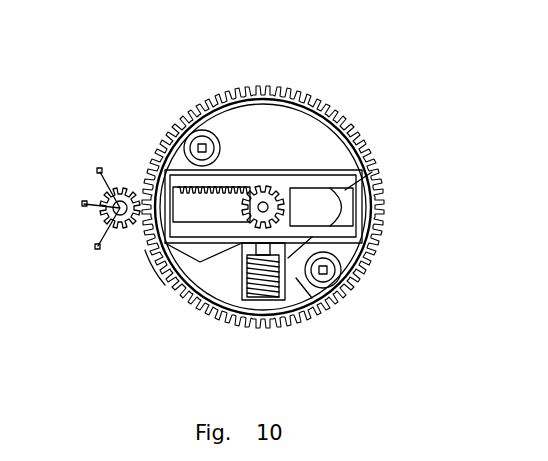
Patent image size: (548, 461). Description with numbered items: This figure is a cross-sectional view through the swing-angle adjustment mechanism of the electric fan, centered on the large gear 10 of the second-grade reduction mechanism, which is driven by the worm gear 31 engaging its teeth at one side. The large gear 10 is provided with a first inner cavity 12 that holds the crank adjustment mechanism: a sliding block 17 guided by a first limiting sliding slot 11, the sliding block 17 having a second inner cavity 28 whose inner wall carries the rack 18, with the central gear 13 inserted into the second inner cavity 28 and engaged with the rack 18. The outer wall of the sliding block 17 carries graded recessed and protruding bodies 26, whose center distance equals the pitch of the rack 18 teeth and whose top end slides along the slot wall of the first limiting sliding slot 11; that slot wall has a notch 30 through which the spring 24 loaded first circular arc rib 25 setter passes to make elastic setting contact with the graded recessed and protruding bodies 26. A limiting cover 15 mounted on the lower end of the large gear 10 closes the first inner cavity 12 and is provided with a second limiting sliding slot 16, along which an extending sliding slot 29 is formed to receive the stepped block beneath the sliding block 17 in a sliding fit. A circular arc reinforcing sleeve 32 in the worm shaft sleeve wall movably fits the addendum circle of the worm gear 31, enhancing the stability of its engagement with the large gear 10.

The large gear 10 is at (270, 92).
The first limiting sliding slot 11 is at (148, 262).
The first inner cavity 12 is at (298, 283).
The central gear 13 is at (250, 188).
The limiting cover 15 is at (331, 100).
The second limiting sliding slot 16 is at (373, 204).
The sliding block 17 is at (167, 172).
The rack 18 is at (252, 200).
The spring 24 is at (273, 305).
The first circular arc rib 25 is at (362, 283).
The graded recessed and protruding bodies 26 is at (213, 242).
The second inner cavity 28 is at (225, 208).
The extending sliding slot 29 is at (371, 179).
The notch 30 is at (365, 256).
The worm gear 31 is at (105, 228).
The circular arc reinforcing sleeve 32 is at (100, 205).